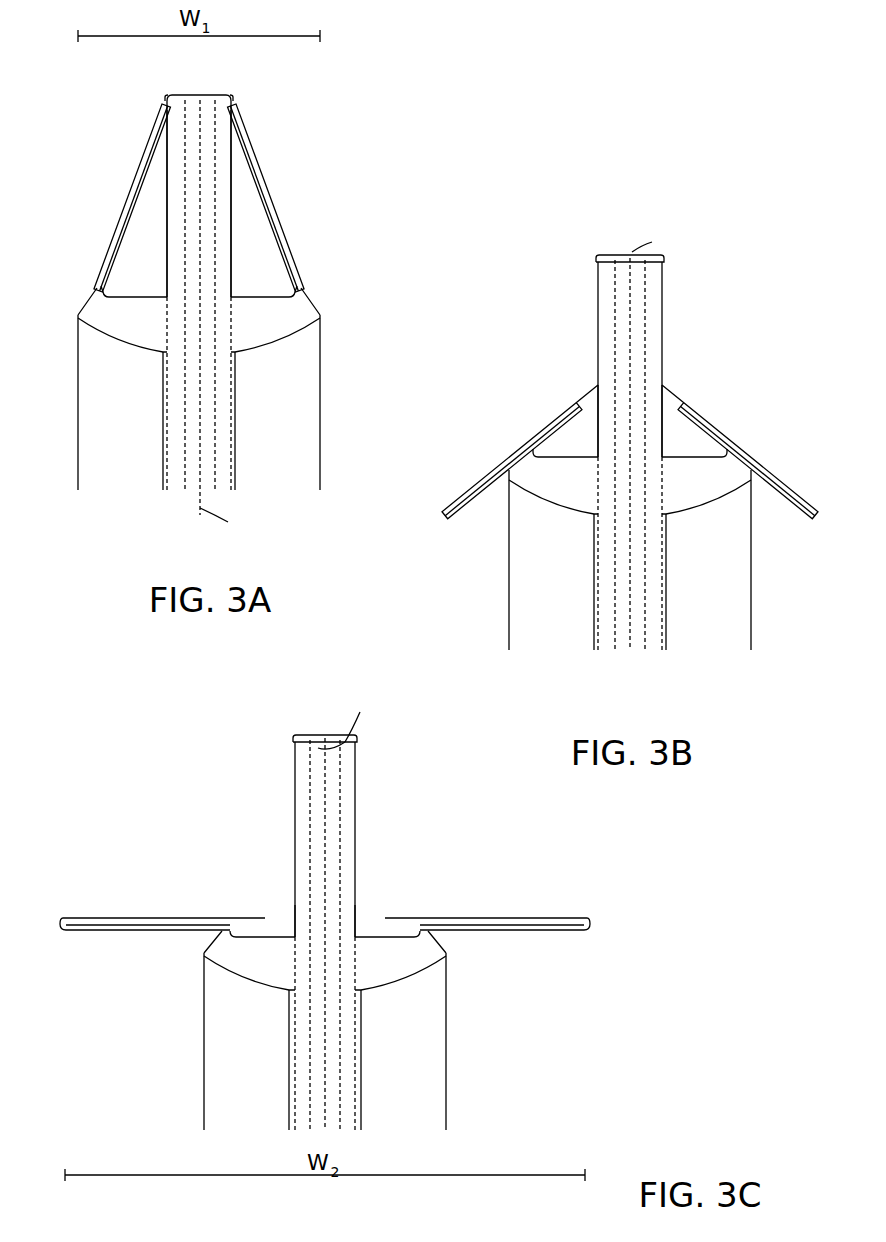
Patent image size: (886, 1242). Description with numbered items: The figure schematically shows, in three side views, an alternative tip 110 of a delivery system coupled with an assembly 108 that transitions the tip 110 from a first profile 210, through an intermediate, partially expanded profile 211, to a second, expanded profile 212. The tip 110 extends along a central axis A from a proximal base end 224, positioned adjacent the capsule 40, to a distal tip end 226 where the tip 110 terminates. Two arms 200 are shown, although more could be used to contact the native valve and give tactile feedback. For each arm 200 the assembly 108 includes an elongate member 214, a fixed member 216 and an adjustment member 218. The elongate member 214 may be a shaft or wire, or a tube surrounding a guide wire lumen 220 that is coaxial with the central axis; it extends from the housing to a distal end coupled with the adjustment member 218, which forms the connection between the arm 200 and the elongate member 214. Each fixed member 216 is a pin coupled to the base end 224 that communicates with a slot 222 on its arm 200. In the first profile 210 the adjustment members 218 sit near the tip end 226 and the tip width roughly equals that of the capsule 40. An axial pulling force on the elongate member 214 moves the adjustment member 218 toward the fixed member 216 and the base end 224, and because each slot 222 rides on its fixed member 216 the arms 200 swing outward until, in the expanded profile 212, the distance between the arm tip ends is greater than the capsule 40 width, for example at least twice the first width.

In FIG. 3A, the capsule 40 is at (78, 432).
In FIG. 3B, the capsule 40 is at (509, 580).
In FIG. 3C, the capsule 40 is at (204, 1040).
In FIG. 3A, the assembly 108 is at (182, 531).
In FIG. 3B, the assembly 108 is at (630, 670).
In FIG. 3C, the assembly 108 is at (320, 1188).
In FIG. 3A, the tip 110 is at (136, 130).
In FIG. 3B, the tip 110 is at (722, 240).
In FIG. 3C, the tip 110 is at (388, 738).
In FIG. 3A, the arm 200 is at (120, 222).
In FIG. 3B, the arm 200 is at (490, 472).
In FIG. 3C, the arm 200 is at (90, 917).
In FIG. 3A, the first profile 210 is at (248, 137).
In FIG. 3B, the intermediate profile 211 is at (690, 400).
In FIG. 3C, the second, expanded profile 212 is at (421, 917).
In FIG. 3A, the elongate member 214 is at (163, 475).
In FIG. 3B, the elongate member 214 is at (594, 622).
In FIG. 3C, the elongate member 214 is at (289, 1090).
In FIG. 3A, the fixed member 216 is at (100, 290).
In FIG. 3B, the fixed member 216 is at (535, 445).
In FIG. 3C, the fixed member 216 is at (230, 924).
In FIG. 3A, the adjustment member 218 is at (163, 107).
In FIG. 3B, the adjustment member 218 is at (596, 387).
In FIG. 3C, the adjustment member 218 is at (294, 937).
In FIG. 3A, the guide wire lumen 220 is at (200, 102).
In FIG. 3B, the guide wire lumen 220 is at (618, 258).
In FIG. 3C, the guide wire lumen 220 is at (318, 748).
In FIG. 3A, the slot 222 is at (137, 190).
In FIG. 3B, the slot 222 is at (452, 505).
In FIG. 3C, the slot 222 is at (155, 931).
In FIG. 3A, the base end 224 is at (126, 343).
In FIG. 3B, the base end 224 is at (556, 504).
In FIG. 3C, the base end 224 is at (250, 980).
In FIG. 3A, the tip end 226 is at (190, 104).
In FIG. 3B, the tip end 226 is at (606, 258).
In FIG. 3C, the tip end 226 is at (305, 747).